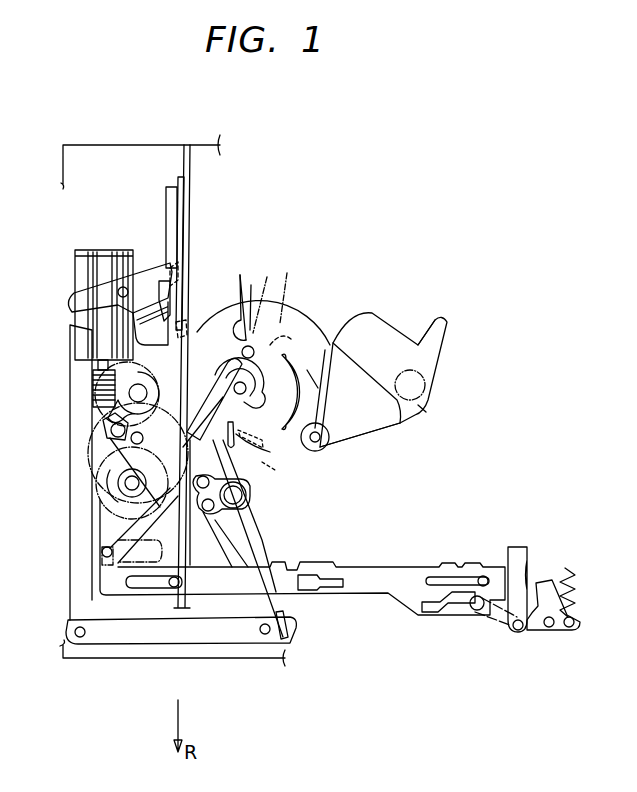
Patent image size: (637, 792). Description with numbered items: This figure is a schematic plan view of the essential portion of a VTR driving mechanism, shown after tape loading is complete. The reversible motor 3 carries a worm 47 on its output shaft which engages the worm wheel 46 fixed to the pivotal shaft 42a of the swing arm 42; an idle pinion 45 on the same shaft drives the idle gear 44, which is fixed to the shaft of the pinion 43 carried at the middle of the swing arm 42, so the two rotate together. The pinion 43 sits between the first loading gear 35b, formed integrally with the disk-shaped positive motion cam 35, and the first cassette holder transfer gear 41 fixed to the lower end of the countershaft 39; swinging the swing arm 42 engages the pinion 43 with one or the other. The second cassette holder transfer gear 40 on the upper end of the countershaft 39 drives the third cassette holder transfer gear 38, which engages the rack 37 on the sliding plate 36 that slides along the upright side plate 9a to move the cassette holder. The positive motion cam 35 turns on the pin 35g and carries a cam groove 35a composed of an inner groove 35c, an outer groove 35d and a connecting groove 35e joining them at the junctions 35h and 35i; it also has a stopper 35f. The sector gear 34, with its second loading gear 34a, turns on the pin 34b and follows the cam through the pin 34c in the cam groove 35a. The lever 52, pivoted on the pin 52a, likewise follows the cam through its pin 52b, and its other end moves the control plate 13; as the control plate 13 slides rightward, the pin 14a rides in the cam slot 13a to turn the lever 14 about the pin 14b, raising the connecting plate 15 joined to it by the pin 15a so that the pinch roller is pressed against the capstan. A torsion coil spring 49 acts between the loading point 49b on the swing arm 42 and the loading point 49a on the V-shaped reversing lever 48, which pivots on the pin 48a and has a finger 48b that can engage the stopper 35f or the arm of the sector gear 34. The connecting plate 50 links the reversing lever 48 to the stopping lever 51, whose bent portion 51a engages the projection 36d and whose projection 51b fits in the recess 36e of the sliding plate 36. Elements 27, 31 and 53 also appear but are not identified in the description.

The reversible motor 3 is at (100, 268).
The side plate 9a is at (192, 195).
The control plate 13 is at (372, 592).
The cam slot 13a is at (433, 610).
The lever 14 is at (543, 632).
The pin 14a is at (476, 610).
The pin 14b is at (572, 627).
The connecting plate 15 is at (522, 570).
The pin 15a is at (518, 632).
The finger of pawl 27 is at (398, 335).
The pin 31 is at (428, 405).
The sector gear 34 is at (395, 430).
The second loading gear 34a is at (426, 386).
The pin 34b is at (325, 442).
The pin 34c is at (265, 462).
The positive motion cam 35 is at (284, 332).
The cam groove 35a is at (310, 370).
The first loading gear 35b is at (287, 273).
The inner groove 35c is at (300, 370).
The outer groove 35d is at (337, 344).
The connecting groove 35e is at (247, 492).
The stopper 35f is at (245, 340).
The pin 35g is at (305, 428).
The junction 35h is at (276, 470).
The junction 35i is at (267, 277).
The sliding plate 36 is at (180, 240).
The projection 36d is at (186, 280).
The recess 36e is at (190, 313).
The rack 37 is at (170, 250).
The third cassette holder transfer gear 38 is at (110, 442).
The countershaft 39 is at (112, 494).
The second cassette holder transfer gear 40 is at (118, 483).
The first cassette holder transfer gear 41 is at (105, 530).
The swing arm 42 is at (244, 502).
The pivotal shaft 42a is at (118, 398).
The pinion 43 is at (225, 518).
The idle gear 44 is at (110, 462).
The idle pinion 45 is at (94, 385).
The worm wheel 46 is at (94, 392).
The worm 47 is at (98, 370).
The reversing lever 48 is at (156, 640).
The pin 48a is at (276, 642).
The finger 48b is at (268, 450).
The torsion coil spring 49 is at (245, 508).
The loading point 49a is at (272, 567).
The loading point 49b is at (222, 585).
The connecting plate 50 is at (70, 596).
The stopping lever 51 is at (70, 312).
The bent portion 51a is at (184, 268).
The projection 51b is at (230, 382).
The lever 52 is at (100, 552).
The pin 52a is at (105, 432).
The pin 52b is at (276, 344).
The pin 53 is at (246, 348).